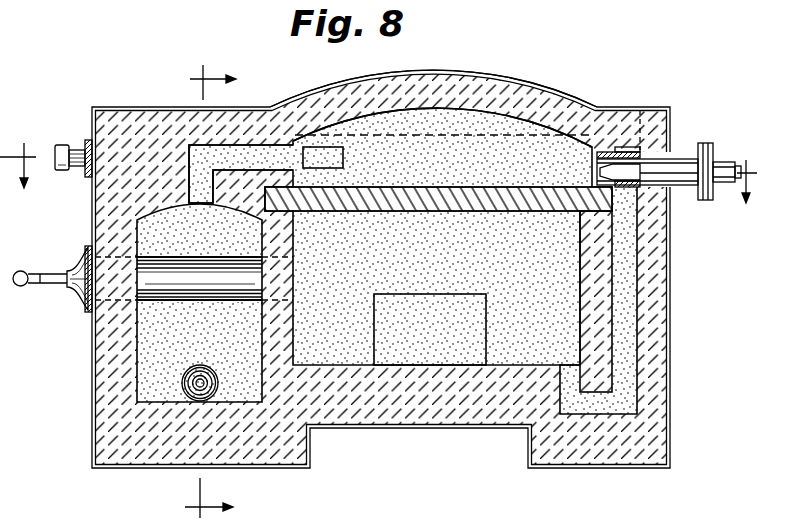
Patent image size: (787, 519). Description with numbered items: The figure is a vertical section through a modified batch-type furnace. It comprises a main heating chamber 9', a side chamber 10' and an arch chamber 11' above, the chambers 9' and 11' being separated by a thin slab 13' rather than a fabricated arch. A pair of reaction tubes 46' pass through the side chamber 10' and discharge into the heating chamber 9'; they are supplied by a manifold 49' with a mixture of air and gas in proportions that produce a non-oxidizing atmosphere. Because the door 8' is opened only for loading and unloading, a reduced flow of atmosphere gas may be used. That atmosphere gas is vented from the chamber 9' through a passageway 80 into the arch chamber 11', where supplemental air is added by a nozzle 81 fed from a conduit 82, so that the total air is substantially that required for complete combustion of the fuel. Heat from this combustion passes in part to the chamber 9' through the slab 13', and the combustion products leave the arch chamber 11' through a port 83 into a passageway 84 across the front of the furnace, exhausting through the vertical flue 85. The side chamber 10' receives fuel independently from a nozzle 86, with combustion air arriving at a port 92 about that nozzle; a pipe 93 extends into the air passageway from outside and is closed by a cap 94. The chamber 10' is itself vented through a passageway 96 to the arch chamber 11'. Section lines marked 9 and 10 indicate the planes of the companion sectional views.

The side chamber 10' is at (358, 269).
The main heating chamber 9' is at (400, 236).
The arch chamber 11' is at (442, 94).
The passageway 84 is at (545, 130).
The vertical flue 85 is at (625, 105).
The thin slab 13' is at (438, 221).
The passageway 80 is at (625, 342).
The door 8' is at (450, 329).
The port 83 is at (335, 157).
The passageway 96 is at (247, 152).
The reaction tubes 46' is at (194, 303).
The nozzle 86 is at (201, 377).
The port 92 is at (232, 380).
The pipe 93 is at (80, 150).
The cap 94 is at (63, 170).
The manifold 49' is at (51, 273).
The nozzle 81 is at (663, 171).
The conduit 82 is at (733, 178).
The section line 10- 10 is at (193, 292).
The section line 9- 9 is at (378, 159).